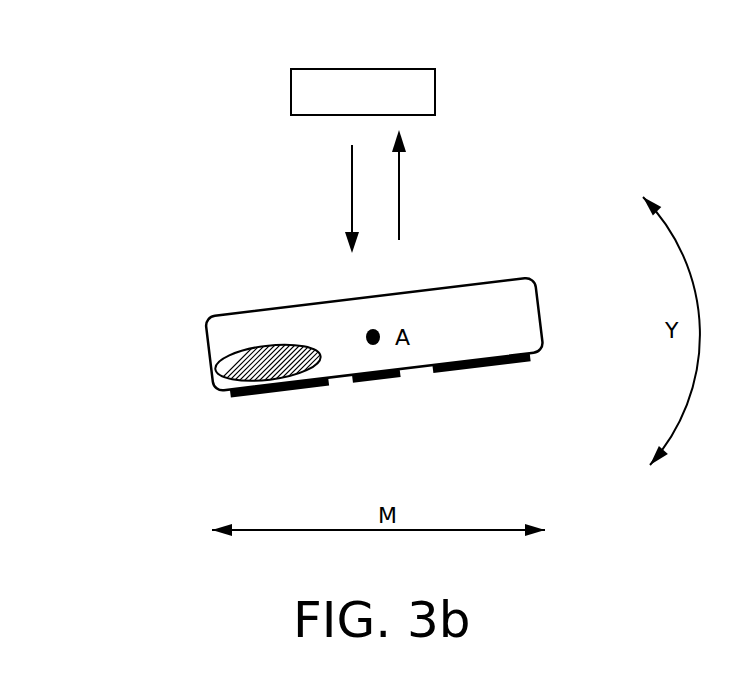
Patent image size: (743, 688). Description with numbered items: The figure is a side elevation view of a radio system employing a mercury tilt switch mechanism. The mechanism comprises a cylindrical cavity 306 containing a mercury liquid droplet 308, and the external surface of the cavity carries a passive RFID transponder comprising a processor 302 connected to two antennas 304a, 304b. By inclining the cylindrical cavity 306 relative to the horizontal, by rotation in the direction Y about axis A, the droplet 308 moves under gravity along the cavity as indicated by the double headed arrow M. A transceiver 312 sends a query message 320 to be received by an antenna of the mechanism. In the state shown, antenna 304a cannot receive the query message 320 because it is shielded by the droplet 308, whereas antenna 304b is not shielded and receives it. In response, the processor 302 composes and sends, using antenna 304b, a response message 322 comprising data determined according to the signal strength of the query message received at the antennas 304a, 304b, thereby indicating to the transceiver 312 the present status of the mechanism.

The transceiver 312 is at (291, 92).
The query message 320 is at (352, 189).
The response message 322 is at (399, 190).
The cylindrical cavity 306 is at (541, 286).
The mercury liquid droplet 308 is at (222, 358).
The processor 302 is at (373, 384).
The antenna 304a is at (238, 400).
The antenna 304b is at (478, 376).